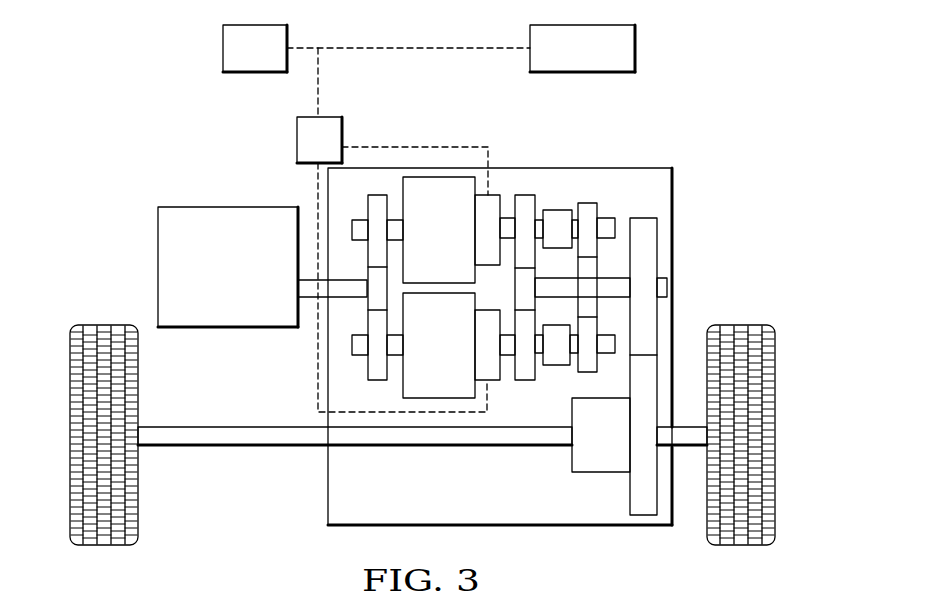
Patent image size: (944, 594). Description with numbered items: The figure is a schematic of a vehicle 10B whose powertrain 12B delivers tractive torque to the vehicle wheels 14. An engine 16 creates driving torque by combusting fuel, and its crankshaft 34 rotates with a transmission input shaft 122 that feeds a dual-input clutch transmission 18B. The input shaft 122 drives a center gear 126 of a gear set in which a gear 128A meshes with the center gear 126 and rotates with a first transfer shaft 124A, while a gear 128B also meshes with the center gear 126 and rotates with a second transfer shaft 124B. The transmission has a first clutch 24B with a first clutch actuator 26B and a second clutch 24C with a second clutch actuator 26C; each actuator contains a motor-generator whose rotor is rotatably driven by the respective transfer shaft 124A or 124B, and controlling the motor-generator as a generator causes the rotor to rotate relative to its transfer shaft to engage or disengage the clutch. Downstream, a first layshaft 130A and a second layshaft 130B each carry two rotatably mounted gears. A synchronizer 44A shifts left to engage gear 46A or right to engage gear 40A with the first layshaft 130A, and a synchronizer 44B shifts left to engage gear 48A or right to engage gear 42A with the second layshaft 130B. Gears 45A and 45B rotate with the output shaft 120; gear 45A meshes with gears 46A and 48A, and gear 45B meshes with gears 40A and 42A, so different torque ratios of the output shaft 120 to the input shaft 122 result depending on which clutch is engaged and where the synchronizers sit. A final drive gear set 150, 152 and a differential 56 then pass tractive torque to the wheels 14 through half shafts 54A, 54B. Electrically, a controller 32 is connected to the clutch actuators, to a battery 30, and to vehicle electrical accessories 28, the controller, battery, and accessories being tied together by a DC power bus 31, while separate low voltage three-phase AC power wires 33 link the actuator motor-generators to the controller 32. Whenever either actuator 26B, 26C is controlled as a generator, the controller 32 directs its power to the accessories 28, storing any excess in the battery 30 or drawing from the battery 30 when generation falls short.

The vehicle 10B is at (735, 158).
The powertrain 12B is at (130, 152).
The vehicle wheels 14 is at (70, 428).
The engine 16 is at (240, 278).
The dual-input clutch transmission 18B is at (673, 207).
The first clutch 24B is at (456, 240).
The second clutch 24C is at (456, 346).
The first clutch actuator 26B is at (496, 197).
The second clutch actuator 26C is at (497, 380).
The vehicle electrical accessories 28 is at (594, 60).
The battery 30 is at (265, 60).
The DC power bus 31 is at (435, 48).
The controller 32 is at (329, 151).
The AC power wires 33 is at (435, 147).
The crankshaft 34 is at (308, 298).
The gear 40A is at (604, 218).
The gear 42A is at (597, 328).
The synchronizer 44A is at (587, 203).
The synchronizer 44B is at (557, 365).
The gear 45A is at (516, 287).
The gear 45B is at (597, 270).
The gear 46A is at (553, 210).
The gear 48A is at (523, 380).
The half shaft 54A is at (240, 447).
The half shaft 54B is at (688, 447).
The differential 56 is at (610, 446).
The output shaft 120 is at (673, 283).
The transmission input shaft 122 is at (358, 282).
The first transfer shaft 124A is at (395, 207).
The second transfer shaft 124B is at (397, 357).
The center gear 126 is at (350, 346).
The gear 128A is at (360, 200).
The gear 128B is at (365, 367).
The first layshaft 130A is at (510, 218).
The second layshaft 130B is at (515, 352).
The final drive gear set 150 is at (673, 303).
The final drive gear set 152 is at (643, 516).